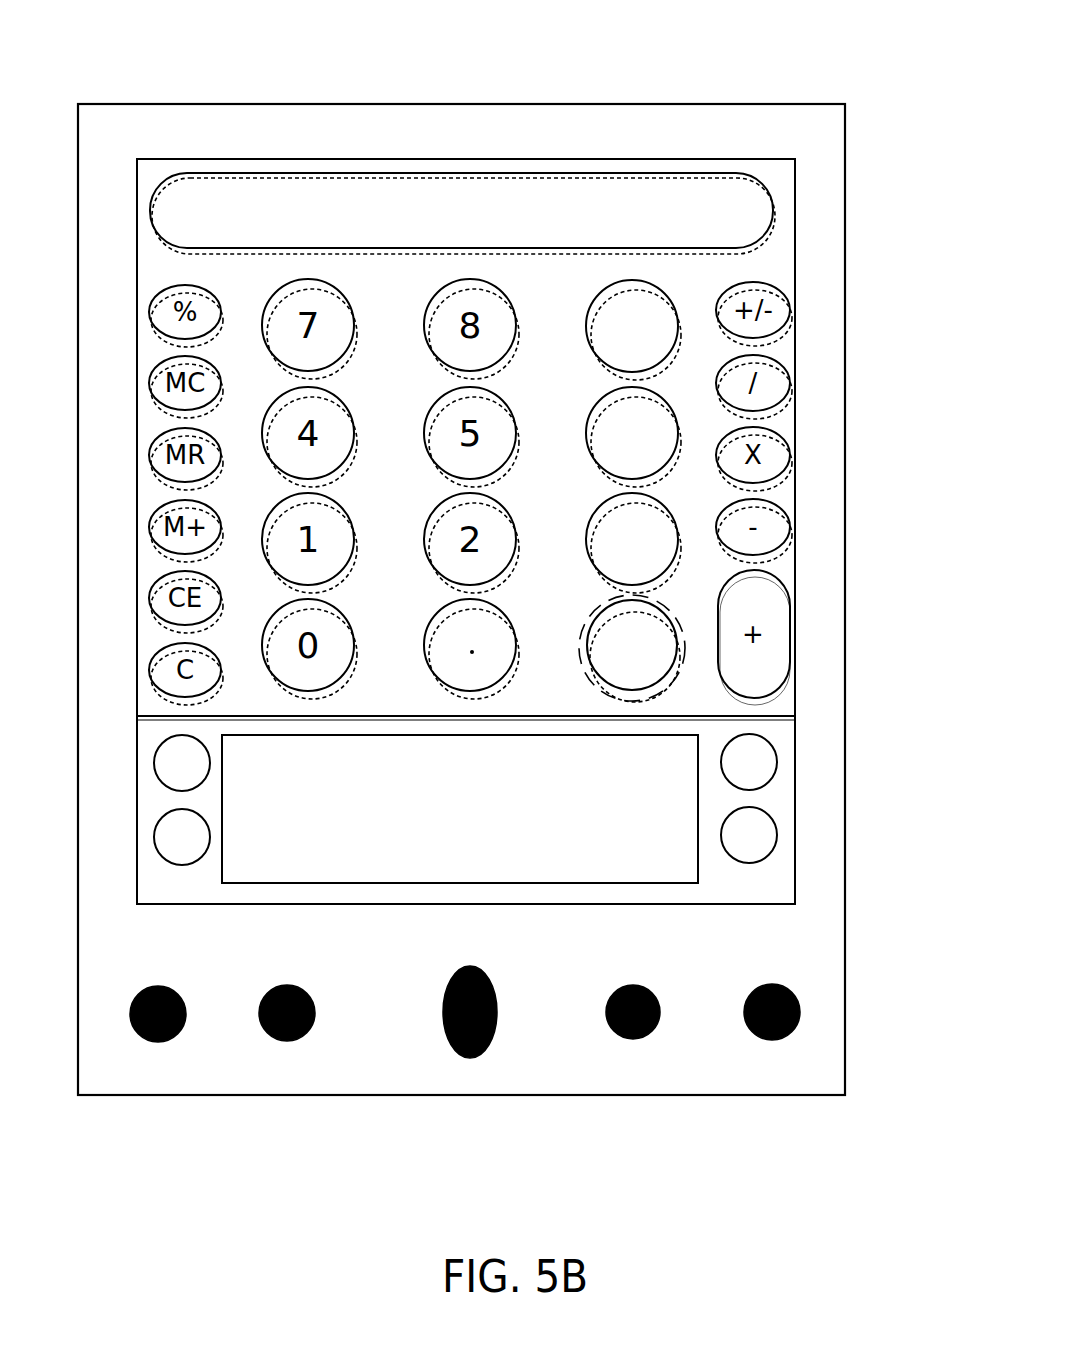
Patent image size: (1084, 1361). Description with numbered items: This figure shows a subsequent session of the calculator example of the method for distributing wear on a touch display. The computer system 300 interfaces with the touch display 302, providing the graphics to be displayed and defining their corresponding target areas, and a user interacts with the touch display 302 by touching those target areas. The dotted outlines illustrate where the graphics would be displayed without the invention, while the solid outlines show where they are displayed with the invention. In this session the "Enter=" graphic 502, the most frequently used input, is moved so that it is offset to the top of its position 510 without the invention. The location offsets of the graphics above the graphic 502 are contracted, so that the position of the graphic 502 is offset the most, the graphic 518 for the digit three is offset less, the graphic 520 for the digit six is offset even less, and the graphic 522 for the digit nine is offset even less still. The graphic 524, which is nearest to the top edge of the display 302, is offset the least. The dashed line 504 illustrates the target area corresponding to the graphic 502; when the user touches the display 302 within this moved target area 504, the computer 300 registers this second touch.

The computer system 300 is at (461, 557).
The touch display 302 is at (466, 479).
The graphic 524 is at (532, 179).
The graphic for "9" 522 is at (750, 291).
The graphic for "6" 520 is at (749, 395).
The graphic for "3" 518 is at (749, 509).
The "Enter=" graphic 502 is at (751, 609).
The target area 504 is at (763, 645).
The position 510 is at (764, 648).